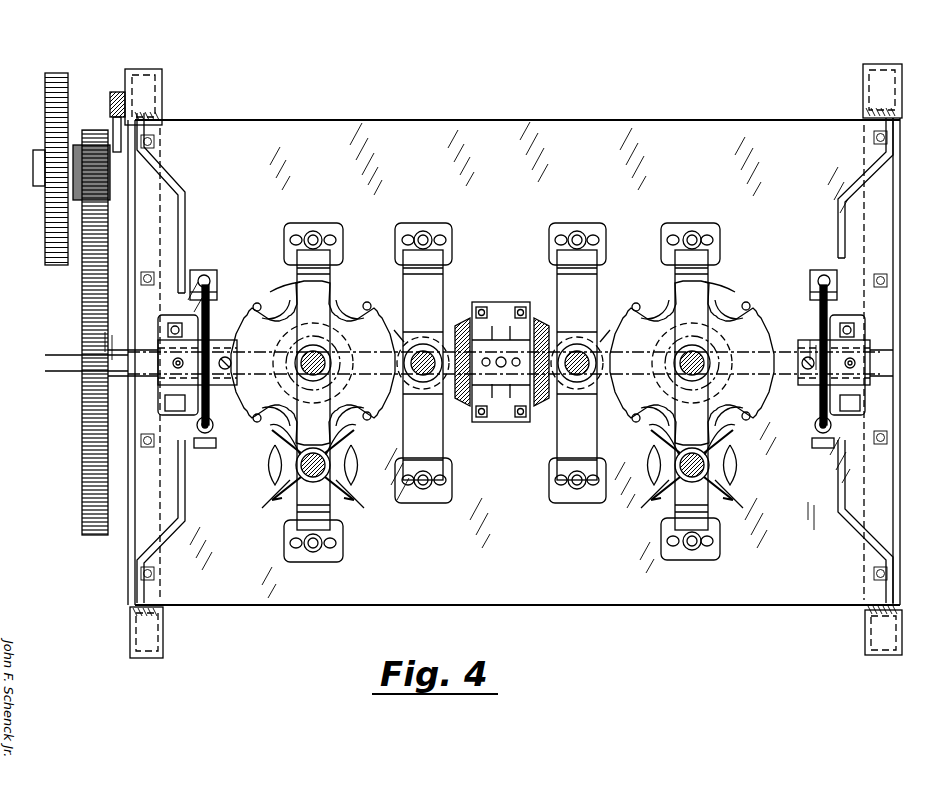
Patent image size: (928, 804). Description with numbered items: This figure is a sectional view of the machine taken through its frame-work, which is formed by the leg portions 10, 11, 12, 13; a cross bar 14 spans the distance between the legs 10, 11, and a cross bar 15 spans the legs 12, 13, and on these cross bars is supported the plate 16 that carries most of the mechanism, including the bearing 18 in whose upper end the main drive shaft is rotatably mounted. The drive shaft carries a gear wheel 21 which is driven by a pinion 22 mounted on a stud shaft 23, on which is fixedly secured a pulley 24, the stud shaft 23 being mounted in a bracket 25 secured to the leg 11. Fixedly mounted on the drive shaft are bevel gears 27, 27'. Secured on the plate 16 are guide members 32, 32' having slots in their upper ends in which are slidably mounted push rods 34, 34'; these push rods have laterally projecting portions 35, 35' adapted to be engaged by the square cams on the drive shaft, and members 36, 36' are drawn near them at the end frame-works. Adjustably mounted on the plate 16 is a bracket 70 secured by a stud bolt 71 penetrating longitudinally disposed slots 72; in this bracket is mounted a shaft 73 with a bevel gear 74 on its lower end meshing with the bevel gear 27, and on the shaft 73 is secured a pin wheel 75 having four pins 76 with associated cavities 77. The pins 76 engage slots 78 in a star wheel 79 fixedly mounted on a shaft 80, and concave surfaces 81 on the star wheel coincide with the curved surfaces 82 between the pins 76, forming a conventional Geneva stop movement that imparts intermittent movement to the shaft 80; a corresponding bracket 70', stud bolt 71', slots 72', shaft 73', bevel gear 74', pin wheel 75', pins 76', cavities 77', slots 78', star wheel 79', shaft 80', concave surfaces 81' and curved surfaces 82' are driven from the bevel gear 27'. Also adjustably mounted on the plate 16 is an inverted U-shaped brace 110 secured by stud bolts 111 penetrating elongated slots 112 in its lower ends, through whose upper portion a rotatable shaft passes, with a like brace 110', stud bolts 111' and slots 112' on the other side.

The leg portion 10 is at (165, 627).
The leg portion 11 is at (157, 85).
The leg portion 12 is at (878, 634).
The leg portion 13 is at (870, 87).
The cross bar 14 is at (137, 300).
The cross bar 15 is at (902, 329).
The plate 16 is at (310, 120).
The bearing 18 is at (500, 324).
The gear wheel 21 is at (82, 300).
The pinion 22 is at (92, 143).
The stud shaft 23 is at (35, 154).
The pulley 24 is at (58, 74).
The bracket 25 is at (117, 92).
The bevel gear 27 is at (458, 351).
The bevel gear 27' is at (546, 350).
The guide member 32 is at (219, 278).
The guide member 32' is at (809, 278).
The push rod 34 is at (218, 417).
The push rod 34' is at (810, 417).
The laterally projecting portion 35 is at (216, 366).
The laterally projecting portion 35' is at (810, 366).
The bracket arm 36 is at (174, 358).
The bracket arm 36' is at (850, 360).
The bracket 70 is at (313, 390).
The cam disk 70' is at (692, 390).
The stud bolt 71 is at (302, 391).
The bolt 71' is at (702, 390).
The slot 72 is at (326, 384).
The bearing block 72' is at (709, 391).
The shaft 73 is at (313, 354).
The hub 73' is at (692, 354).
The bevel gear 74 is at (395, 328).
The roller 74' is at (666, 330).
The pin wheel 75 is at (279, 274).
The cam lobe 75' is at (723, 295).
The pin 76 is at (316, 362).
The pin 76' is at (691, 364).
The cavity 77 is at (302, 358).
The notch 77' is at (703, 362).
The slot 78 is at (332, 461).
The pawl 78' is at (699, 468).
The star wheel 79 is at (301, 465).
The star wheel 79' is at (708, 465).
The shaft 80 is at (313, 441).
The hub 80' is at (692, 450).
The concave surface 81 is at (319, 461).
The spring 81' is at (695, 465).
The curved surface 82 is at (323, 363).
The ring 82' is at (720, 338).
The inverted U-shaped brace 110 is at (445, 365).
The slide bar 110' is at (598, 365).
The stud bolt 111 is at (431, 363).
The bolt 111' is at (578, 361).
The elongated slot 112 is at (439, 358).
The guide block 112' is at (588, 359).